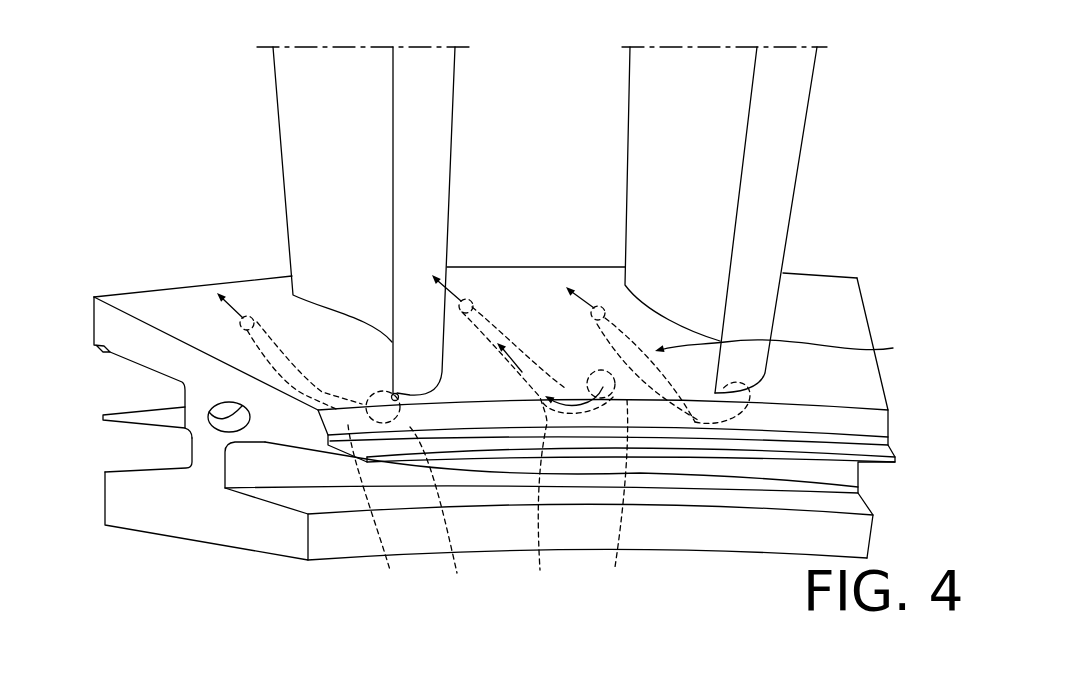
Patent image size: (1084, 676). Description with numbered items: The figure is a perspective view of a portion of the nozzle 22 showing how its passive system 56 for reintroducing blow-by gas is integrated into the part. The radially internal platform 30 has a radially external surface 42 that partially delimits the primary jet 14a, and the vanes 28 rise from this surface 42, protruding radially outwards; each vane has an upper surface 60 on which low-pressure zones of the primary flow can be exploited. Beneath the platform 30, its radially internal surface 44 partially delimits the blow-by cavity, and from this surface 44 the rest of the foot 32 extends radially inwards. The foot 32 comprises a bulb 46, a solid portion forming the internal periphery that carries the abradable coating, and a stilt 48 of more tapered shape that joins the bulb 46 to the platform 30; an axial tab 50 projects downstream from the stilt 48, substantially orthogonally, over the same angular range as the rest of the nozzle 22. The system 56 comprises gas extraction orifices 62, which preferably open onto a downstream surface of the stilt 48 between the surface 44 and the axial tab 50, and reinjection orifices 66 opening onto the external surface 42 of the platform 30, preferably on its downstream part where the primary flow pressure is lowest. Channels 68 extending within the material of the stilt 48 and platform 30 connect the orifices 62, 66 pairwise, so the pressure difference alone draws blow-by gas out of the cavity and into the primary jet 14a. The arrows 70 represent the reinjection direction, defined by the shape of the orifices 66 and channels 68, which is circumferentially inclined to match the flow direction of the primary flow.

The nozzle 22 is at (140, 138).
The vanes 28 is at (303, 115).
The radially internal platform 30 is at (128, 328).
The foot 32 is at (160, 548).
The radially external surface 42 is at (178, 305).
The radially internal surface 44 is at (134, 362).
The bulb 46 is at (282, 538).
The stilt 48 is at (200, 453).
The axial tab 50 is at (124, 416).
The passive system for reintroducing blow-by gas 56 is at (796, 347).
The upper surface of the vanes 60 is at (436, 91).
The gas extraction orifices 62 is at (558, 486).
The reinjection orifices 66 is at (248, 326).
The channels 68 is at (472, 455).
The reinjection direction arrows 70 is at (215, 289).
The primary jet 14a is at (580, 133).